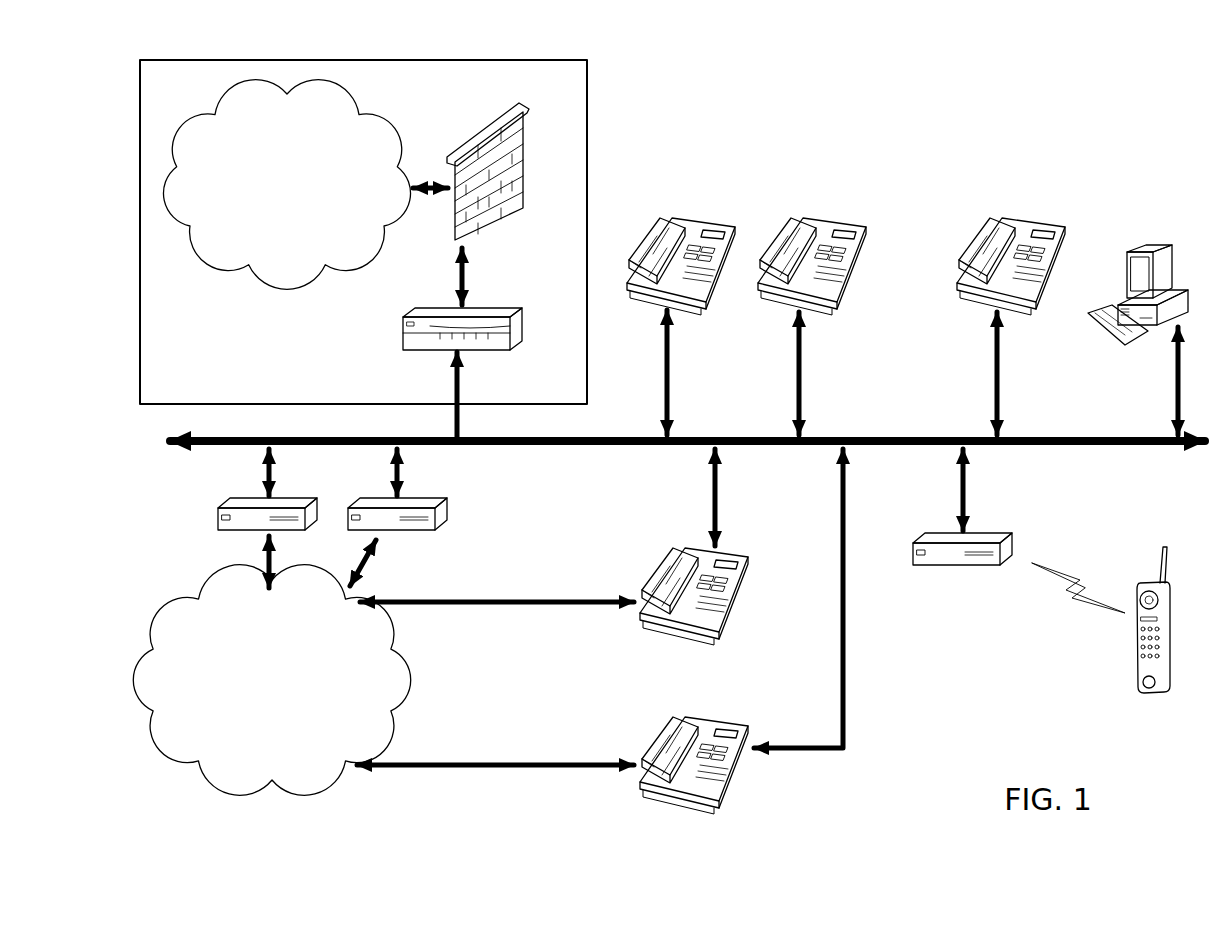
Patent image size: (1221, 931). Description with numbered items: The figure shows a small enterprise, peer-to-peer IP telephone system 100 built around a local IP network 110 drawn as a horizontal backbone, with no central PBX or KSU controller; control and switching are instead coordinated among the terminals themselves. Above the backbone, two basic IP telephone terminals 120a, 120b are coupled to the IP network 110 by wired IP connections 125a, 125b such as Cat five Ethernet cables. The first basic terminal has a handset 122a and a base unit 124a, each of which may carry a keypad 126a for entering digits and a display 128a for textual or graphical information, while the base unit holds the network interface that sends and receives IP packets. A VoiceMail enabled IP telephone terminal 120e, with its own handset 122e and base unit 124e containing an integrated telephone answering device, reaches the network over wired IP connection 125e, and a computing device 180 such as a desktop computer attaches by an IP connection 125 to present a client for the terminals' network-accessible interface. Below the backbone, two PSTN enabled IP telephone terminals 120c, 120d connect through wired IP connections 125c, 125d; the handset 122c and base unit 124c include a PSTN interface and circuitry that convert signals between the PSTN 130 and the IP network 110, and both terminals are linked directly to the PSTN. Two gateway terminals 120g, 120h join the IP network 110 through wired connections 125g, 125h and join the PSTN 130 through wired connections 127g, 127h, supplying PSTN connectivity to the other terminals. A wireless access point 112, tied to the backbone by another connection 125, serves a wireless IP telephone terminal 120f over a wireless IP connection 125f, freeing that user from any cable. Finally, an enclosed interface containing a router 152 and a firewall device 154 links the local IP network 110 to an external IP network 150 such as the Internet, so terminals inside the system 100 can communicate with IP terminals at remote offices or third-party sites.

The telephone system 100 is at (1149, 57).
The IP network 110 is at (1078, 436).
The wireless access point 112 is at (994, 534).
The basic IP telephone terminal 120a is at (687, 225).
The basic IP telephone terminal 120b is at (821, 157).
The PSTN enabled IP telephone terminal 120c is at (700, 590).
The PSTN enabled IP telephone terminal 120d is at (755, 714).
The VoiceMail enabled IP telephone terminal 120e is at (1004, 219).
The wireless IP telephone terminal 120f is at (1179, 544).
The gateway terminal 120g is at (444, 489).
The gateway terminal 120h is at (302, 489).
The handset 122a is at (645, 244).
The handset 122c is at (662, 575).
The handset 122e is at (981, 244).
The base unit 124a is at (666, 275).
The base unit 124c is at (683, 604).
The base unit 124e is at (986, 266).
The IP connection 125 is at (1175, 380).
The wired IP connection 125a is at (665, 363).
The wired IP connection 125b is at (794, 370).
The wired IP connection 125c is at (709, 482).
The wired IP connection 125d is at (839, 487).
The wired IP connection 125e is at (992, 366).
The wireless IP connection 125f is at (1084, 579).
The wired connection 125g is at (390, 470).
The wired connection 125h is at (265, 468).
The keypad 126a is at (718, 286).
The wired connections 127g is at (360, 550).
The wired connections 127h is at (262, 554).
The display 128a is at (739, 220).
The PSTN 130 is at (260, 740).
The external IP network 150 is at (278, 231).
The router 152 is at (490, 305).
The firewall device 154 is at (520, 140).
The computing device 180 is at (1166, 231).